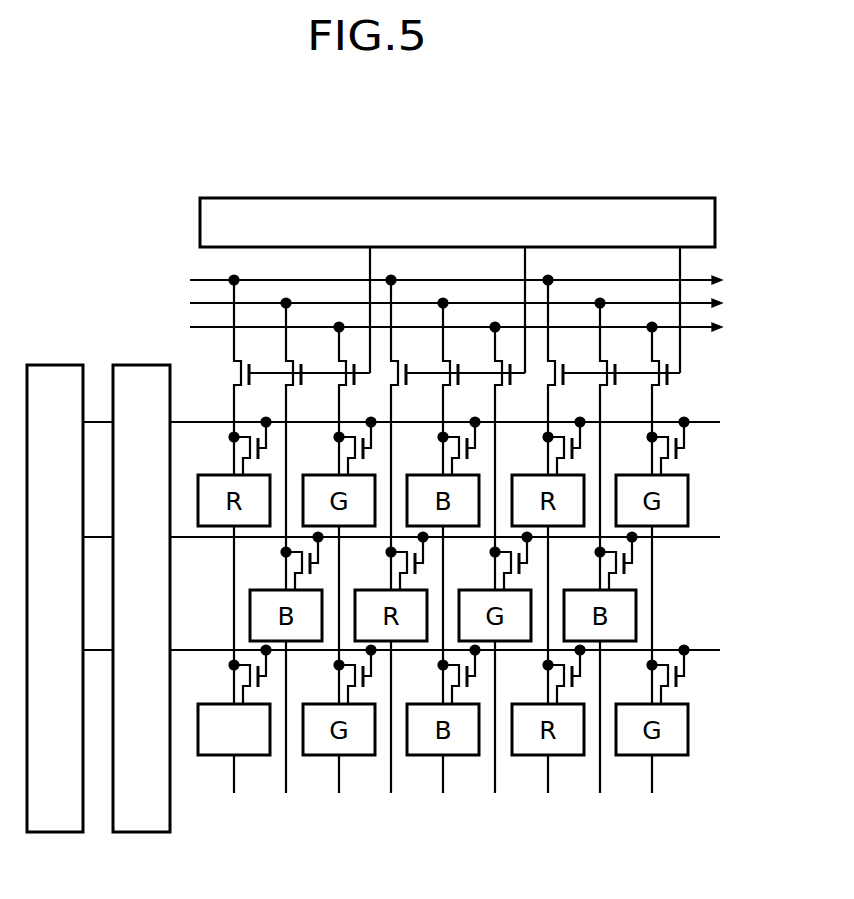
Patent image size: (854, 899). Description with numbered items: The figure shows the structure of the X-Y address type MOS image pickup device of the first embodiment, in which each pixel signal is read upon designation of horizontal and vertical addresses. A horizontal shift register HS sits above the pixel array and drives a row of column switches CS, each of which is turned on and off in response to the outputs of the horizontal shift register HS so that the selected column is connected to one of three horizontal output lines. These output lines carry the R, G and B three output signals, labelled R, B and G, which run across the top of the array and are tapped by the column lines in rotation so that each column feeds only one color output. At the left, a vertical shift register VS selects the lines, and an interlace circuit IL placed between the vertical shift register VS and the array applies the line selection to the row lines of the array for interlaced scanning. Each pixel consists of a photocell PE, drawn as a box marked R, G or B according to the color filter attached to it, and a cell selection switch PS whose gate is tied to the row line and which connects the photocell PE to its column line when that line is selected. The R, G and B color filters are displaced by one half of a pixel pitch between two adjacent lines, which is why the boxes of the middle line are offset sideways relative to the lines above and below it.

The horizontal shift register HS is at (545, 198).
The vertical shift register VS is at (62, 833).
The interlace circuit IL is at (135, 833).
The column switch CS is at (235, 378).
The photocell PE is at (215, 757).
The cell selection switch PS is at (262, 692).
The R output signal R is at (472, 275).
The B output signal B is at (472, 305).
The G output signal G is at (473, 329).